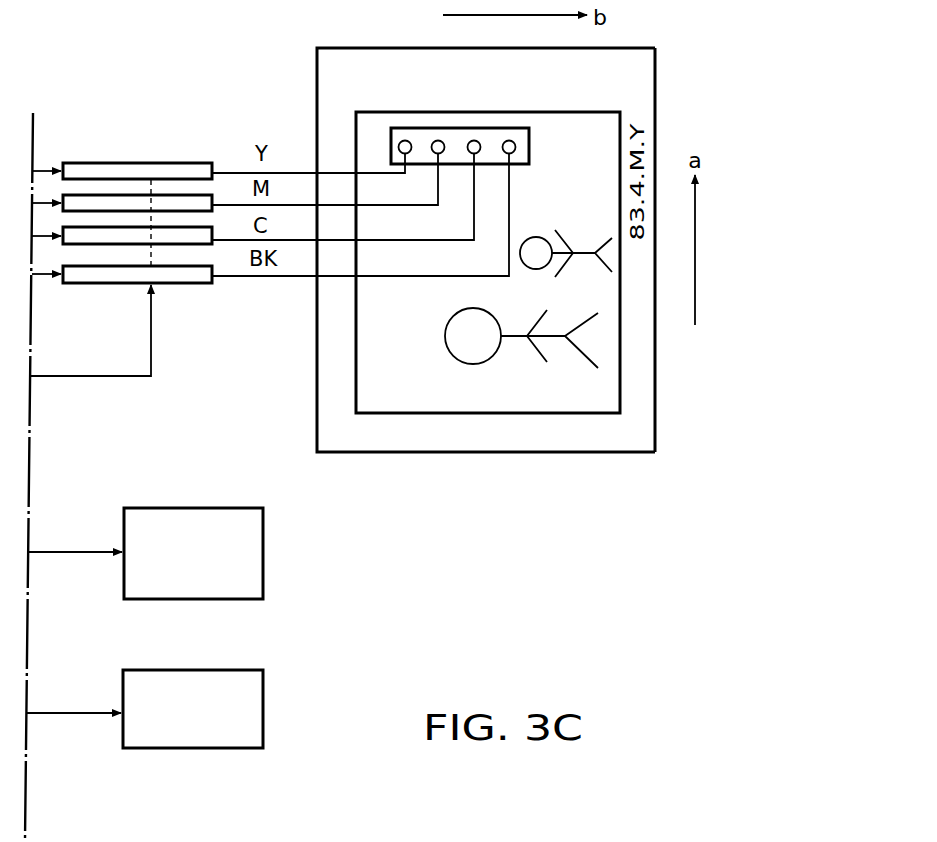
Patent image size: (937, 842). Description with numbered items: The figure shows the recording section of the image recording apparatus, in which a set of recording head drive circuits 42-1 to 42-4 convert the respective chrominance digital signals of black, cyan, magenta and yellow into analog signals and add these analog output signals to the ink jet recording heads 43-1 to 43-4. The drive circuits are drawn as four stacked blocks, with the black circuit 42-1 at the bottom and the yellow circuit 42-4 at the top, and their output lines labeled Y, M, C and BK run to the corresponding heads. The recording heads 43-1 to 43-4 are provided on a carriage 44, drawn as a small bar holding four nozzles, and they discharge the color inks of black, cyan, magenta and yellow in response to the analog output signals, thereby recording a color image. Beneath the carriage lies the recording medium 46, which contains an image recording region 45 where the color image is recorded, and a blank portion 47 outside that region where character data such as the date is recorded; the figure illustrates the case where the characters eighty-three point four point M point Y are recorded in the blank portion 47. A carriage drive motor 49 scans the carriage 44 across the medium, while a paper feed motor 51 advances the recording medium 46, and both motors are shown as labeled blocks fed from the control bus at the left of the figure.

The recording head drive circuit 42-4 is at (137, 155).
The recording head drive circuit 42-1 is at (137, 291).
The recording head 43-4 is at (406, 140).
The recording head 43-1 is at (510, 140).
The carriage 44 is at (388, 143).
The image recording region 45 is at (420, 400).
The recording medium 46 is at (530, 454).
The blank portion 47 is at (633, 418).
The carriage drive motor 49 is at (203, 507).
The paper feed motor 51 is at (197, 670).